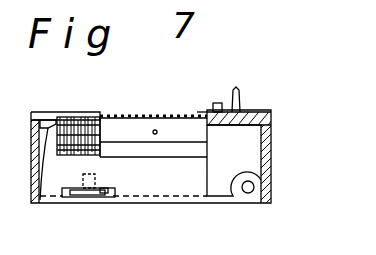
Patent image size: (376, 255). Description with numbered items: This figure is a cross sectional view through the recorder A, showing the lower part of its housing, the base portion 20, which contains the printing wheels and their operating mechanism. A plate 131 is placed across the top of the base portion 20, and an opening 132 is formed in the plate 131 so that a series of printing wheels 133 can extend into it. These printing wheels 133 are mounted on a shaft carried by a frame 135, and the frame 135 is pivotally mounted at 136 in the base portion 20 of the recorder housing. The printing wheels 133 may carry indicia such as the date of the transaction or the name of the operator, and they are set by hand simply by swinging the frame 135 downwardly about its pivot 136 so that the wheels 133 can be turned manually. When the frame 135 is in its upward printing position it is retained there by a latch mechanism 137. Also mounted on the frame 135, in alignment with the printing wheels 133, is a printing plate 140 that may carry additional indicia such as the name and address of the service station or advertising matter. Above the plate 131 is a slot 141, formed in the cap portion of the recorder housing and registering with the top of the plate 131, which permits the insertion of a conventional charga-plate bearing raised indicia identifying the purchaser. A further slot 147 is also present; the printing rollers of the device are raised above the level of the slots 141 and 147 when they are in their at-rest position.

The base portion 20 is at (271, 146).
The plate 131 is at (271, 113).
The slot 141 is at (200, 112).
The printing plate 140 is at (140, 115).
The pivot 136 is at (255, 187).
The recorder A is at (271, 176).
The opening 132 is at (33, 118).
The slot 147 is at (47, 95).
The frame 135 is at (47, 160).
The printing wheels 133 is at (78, 117).
The latch mechanism 137 is at (88, 192).